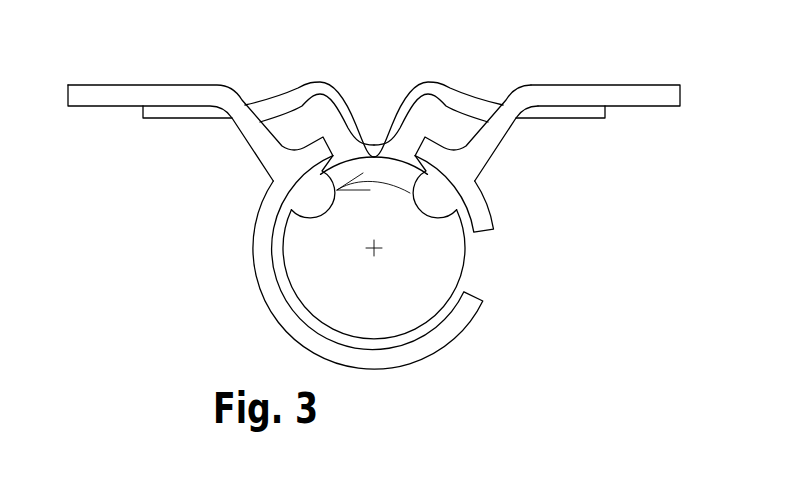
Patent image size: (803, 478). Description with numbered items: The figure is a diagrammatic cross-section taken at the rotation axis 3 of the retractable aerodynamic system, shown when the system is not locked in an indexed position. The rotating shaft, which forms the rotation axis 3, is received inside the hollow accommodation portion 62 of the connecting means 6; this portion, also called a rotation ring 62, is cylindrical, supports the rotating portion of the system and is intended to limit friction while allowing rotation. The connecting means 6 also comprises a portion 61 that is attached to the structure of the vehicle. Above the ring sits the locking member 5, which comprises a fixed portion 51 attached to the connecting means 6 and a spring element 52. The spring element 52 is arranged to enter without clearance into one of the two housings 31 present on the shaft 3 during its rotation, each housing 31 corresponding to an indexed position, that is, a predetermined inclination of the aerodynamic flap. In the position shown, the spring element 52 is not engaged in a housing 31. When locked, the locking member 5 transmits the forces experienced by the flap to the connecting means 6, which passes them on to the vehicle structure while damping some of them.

The rotation axis 3 is at (446, 322).
The housing 31 is at (300, 193).
The locking member 5 is at (315, 52).
The fixed portion 51 is at (168, 119).
The spring element 52 is at (401, 75).
The connecting means 6 is at (104, 57).
The portion attached to the structure of the vehicle 61 is at (647, 107).
The hollow accommodation portion 62 is at (272, 317).